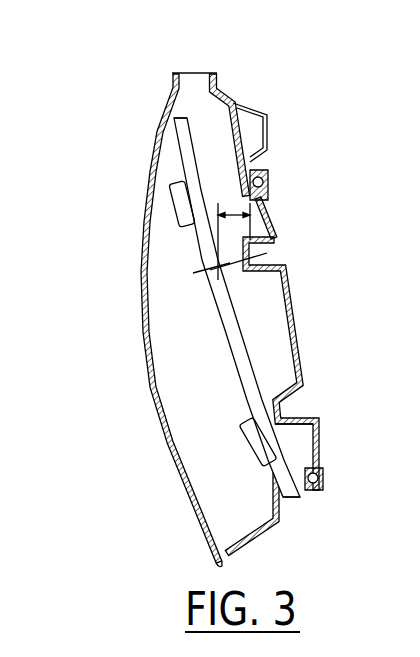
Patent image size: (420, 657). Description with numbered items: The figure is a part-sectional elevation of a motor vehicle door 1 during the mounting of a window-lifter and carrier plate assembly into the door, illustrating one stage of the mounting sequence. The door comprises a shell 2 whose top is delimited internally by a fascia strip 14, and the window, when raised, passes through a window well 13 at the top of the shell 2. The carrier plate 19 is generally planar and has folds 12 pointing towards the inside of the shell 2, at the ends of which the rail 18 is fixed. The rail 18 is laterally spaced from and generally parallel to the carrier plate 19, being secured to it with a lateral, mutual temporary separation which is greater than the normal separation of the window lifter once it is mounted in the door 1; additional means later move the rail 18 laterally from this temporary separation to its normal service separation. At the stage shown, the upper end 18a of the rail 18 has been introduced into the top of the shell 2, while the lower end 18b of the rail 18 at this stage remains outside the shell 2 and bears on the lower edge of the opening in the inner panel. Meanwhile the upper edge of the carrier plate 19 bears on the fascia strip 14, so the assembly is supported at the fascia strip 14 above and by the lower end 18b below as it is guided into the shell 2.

The motor vehicle door 1 is at (207, 292).
The shell 2 is at (175, 477).
The folds 12 is at (292, 421).
The window well 13 is at (203, 72).
The fascia strip 14 is at (253, 160).
The rail 18 is at (222, 330).
The upper end of the rail 18a is at (177, 117).
The lower end of the rail 18b is at (301, 500).
The carrier plate 19 is at (300, 347).